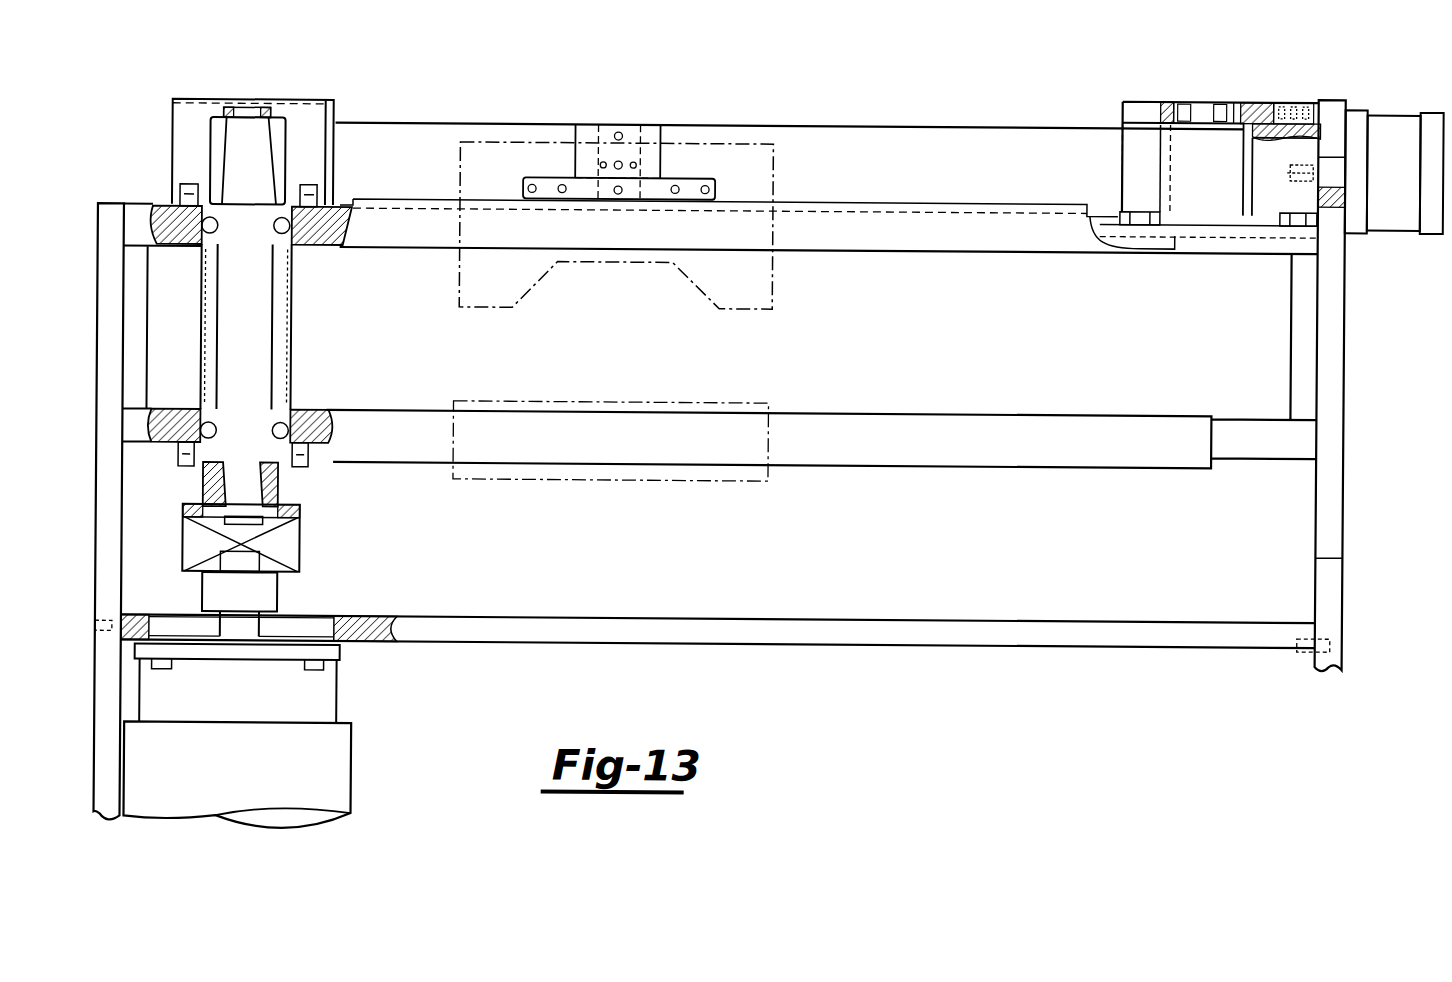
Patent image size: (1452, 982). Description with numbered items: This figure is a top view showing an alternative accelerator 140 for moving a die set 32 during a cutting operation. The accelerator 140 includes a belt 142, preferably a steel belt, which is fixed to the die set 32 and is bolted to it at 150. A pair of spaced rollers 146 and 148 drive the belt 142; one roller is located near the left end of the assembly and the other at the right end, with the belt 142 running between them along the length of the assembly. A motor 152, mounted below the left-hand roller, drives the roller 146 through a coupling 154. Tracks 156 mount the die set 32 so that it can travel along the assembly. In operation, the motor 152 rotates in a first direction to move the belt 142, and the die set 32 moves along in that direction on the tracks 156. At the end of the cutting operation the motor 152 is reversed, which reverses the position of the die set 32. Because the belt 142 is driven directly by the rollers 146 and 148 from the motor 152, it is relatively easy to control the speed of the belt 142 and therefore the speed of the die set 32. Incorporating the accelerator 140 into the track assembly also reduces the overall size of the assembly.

The die set 32 is at (720, 280).
The accelerator 140 is at (906, 118).
The belt 142 is at (378, 147).
The roller 146 is at (236, 178).
The roller 148 is at (1193, 142).
The bolted connection 150 is at (650, 133).
The motor 152 is at (340, 775).
The coupling 154 is at (183, 512).
The tracks 156 is at (405, 233).